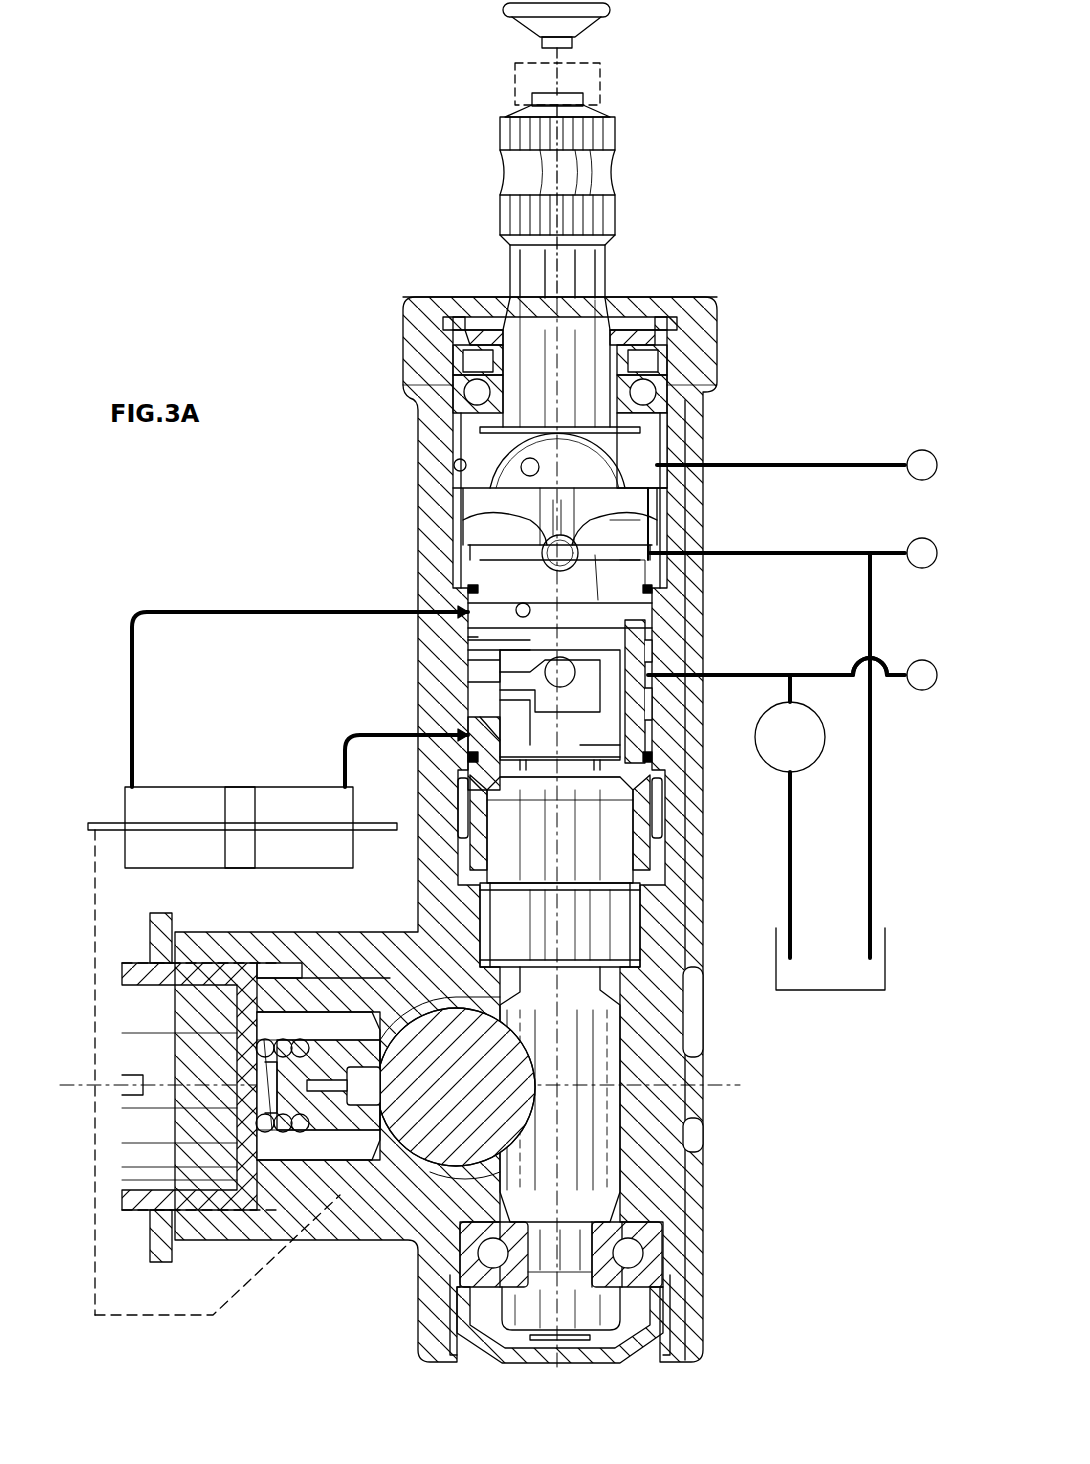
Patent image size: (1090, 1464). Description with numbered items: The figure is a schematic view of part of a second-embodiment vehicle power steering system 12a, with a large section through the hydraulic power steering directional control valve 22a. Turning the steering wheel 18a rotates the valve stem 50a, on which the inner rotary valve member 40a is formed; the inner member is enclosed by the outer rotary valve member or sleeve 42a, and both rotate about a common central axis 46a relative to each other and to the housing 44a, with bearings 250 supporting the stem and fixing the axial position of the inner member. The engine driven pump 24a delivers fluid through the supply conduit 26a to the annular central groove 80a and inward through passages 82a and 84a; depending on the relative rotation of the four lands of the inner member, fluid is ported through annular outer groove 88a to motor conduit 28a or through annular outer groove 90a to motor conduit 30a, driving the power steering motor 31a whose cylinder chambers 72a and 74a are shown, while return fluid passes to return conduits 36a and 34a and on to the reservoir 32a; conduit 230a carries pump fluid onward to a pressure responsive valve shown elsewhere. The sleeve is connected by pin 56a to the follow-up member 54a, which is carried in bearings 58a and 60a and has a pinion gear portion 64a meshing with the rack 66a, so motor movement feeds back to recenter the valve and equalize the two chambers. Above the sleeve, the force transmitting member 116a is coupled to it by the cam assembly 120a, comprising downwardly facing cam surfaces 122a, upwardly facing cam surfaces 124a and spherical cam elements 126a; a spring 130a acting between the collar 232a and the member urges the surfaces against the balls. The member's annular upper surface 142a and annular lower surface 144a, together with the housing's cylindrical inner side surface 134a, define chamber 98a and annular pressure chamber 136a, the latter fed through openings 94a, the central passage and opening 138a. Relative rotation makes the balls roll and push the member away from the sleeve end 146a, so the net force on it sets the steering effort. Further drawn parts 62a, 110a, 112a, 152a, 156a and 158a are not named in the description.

The vehicle power steering system 12a is at (738, 195).
The steering wheel 18a is at (512, 16).
The hydraulic power steering directional control valve 22a is at (395, 335).
The engine driven pump 24a is at (815, 737).
The supply conduit 26a is at (758, 672).
The motor conduit 28a is at (210, 612).
The motor conduit 30a is at (370, 733).
The power steering motor 31a is at (238, 780).
The reservoir 32a is at (793, 990).
The return conduit 34a is at (872, 820).
The return conduit 36a is at (830, 462).
The inner rotary valve member 40a is at (455, 752).
The outer rotary valve member 42a is at (460, 682).
The housing 44a is at (425, 297).
The common central axis 46a is at (545, 75).
The valve stem 50a is at (590, 170).
The follow-up member 54a is at (510, 870).
The pin 56a is at (460, 850).
The bearing 58a is at (485, 935).
The bearing 60a is at (640, 1255).
The plunger 62a is at (318, 1086).
The pinion gear portion 64a is at (615, 1140).
The rack 66a is at (420, 1215).
The motor cylinder chamber 72a is at (160, 905).
The motor cylinder chamber 74a is at (280, 870).
The annular central groove 80a is at (675, 660).
The passage 82a is at (615, 680).
The passage 84a is at (470, 668).
The annular outer groove 88a is at (470, 600).
The annular outer groove 90a is at (468, 725).
The openings 94a is at (545, 673).
The chamber 98a is at (658, 520).
The input shaft 110a is at (388, 390).
The valve body 112a is at (430, 445).
The force transmitting member 116a is at (668, 500).
The cam assembly 120a is at (470, 515).
The cam surfaces 122a is at (551, 500).
The cam surfaces 124a is at (470, 580).
The spherical cam elements 126a is at (563, 540).
The spring 130a is at (500, 460).
The cylindrical inner side surface 134a is at (455, 465).
The annular pressure chamber 136a is at (650, 442).
The opening 138a is at (529, 457).
The annular upper surface 142a is at (535, 497).
The annular lower surface 144a is at (650, 585).
The end 146a is at (598, 560).
The land 152a is at (462, 530).
The seal 156a is at (668, 365).
The retainer 158a is at (665, 335).
The conduit 230a is at (885, 672).
The collar 232a is at (670, 405).
The bearings 250 is at (445, 400).